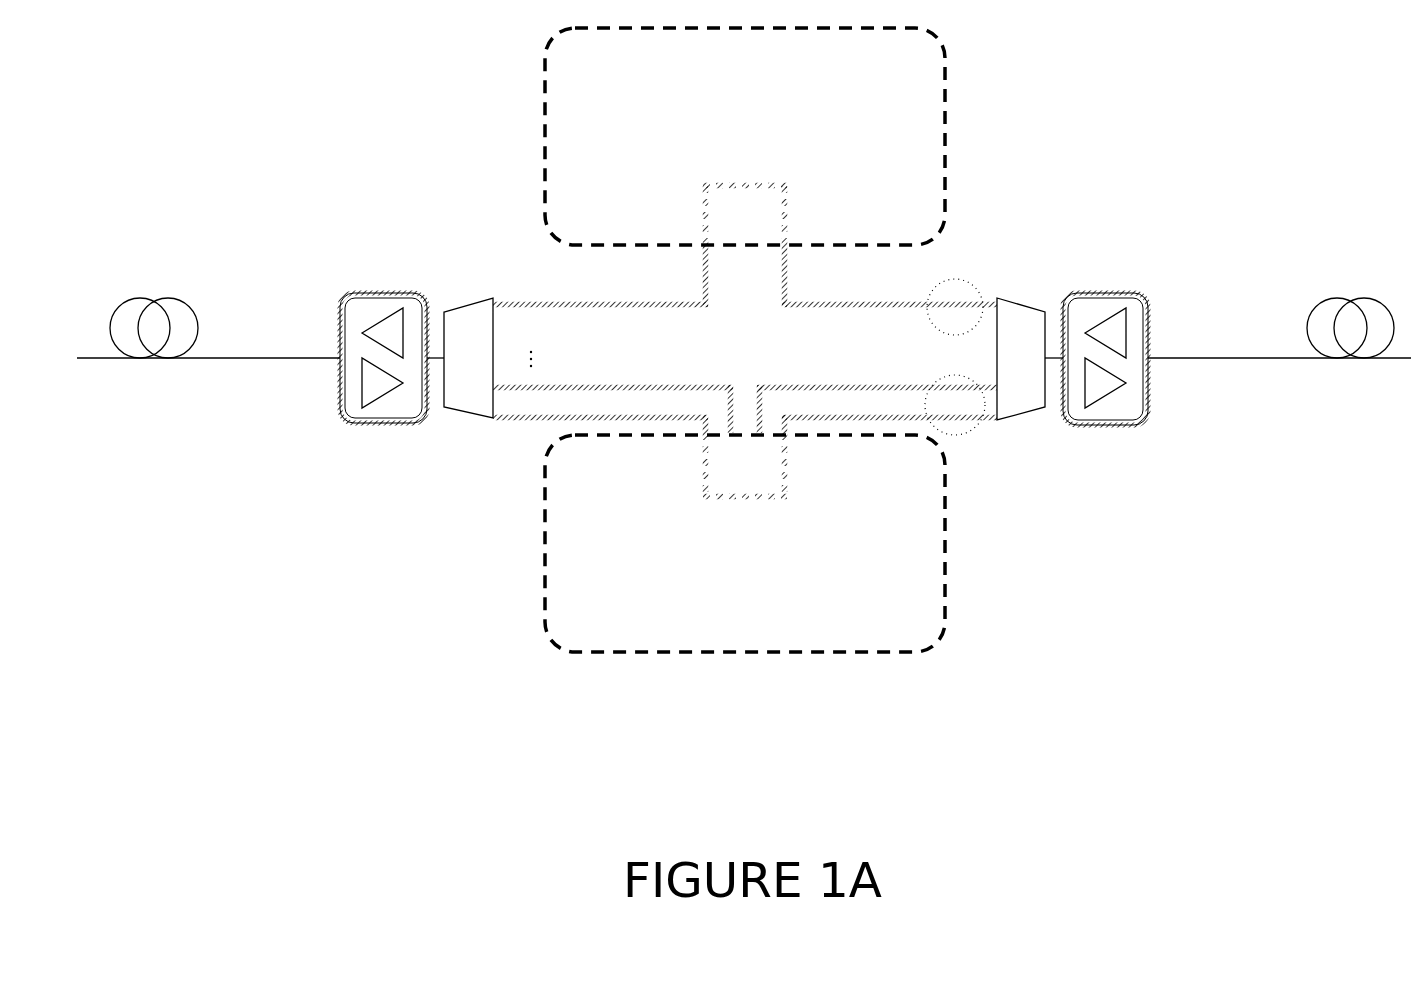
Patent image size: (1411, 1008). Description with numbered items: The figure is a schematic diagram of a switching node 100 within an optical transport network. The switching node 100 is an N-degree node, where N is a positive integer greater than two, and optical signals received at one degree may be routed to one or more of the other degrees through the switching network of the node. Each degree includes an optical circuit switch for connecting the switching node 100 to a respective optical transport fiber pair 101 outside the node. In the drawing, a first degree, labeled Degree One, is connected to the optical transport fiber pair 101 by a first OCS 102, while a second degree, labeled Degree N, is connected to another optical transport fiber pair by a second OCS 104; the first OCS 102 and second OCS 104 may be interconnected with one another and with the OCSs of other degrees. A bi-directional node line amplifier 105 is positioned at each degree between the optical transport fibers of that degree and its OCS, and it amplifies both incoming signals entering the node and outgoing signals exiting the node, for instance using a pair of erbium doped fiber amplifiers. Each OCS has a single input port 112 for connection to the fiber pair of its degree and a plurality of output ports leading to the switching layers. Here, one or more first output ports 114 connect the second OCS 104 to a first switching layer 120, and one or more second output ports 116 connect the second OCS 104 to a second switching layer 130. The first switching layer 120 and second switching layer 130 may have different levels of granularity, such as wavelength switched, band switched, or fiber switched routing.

The switching node 100 is at (744, 415).
The optical transport fiber pair 101 is at (225, 358).
The first optical circuit switch 102 is at (470, 412).
The second optical circuit switch 104 is at (1020, 413).
The bi-directional node line amplifier 105 is at (1123, 423).
The input port 112 is at (1047, 350).
The first output ports 114 is at (967, 278).
The second output ports 116 is at (957, 442).
The first switching layer 120 is at (745, 136).
The second switching layer 130 is at (745, 543).